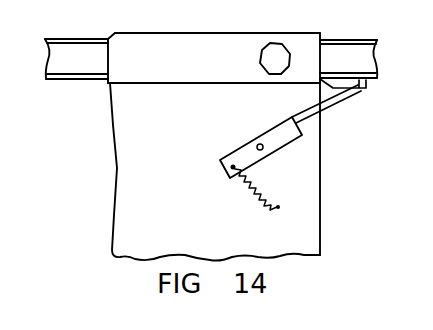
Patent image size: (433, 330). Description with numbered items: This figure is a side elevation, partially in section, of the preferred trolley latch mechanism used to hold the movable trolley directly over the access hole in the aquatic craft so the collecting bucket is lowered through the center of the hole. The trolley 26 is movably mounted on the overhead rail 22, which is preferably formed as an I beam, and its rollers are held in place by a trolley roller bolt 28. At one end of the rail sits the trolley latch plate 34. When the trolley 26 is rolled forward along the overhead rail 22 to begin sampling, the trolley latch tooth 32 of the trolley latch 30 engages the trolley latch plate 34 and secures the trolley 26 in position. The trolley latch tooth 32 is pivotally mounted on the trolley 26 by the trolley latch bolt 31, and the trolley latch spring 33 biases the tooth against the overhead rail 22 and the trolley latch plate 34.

The overhead rail 22 is at (88, 67).
The trolley 26 is at (167, 67).
The trolley roller bolt 28 is at (275, 58).
The trolley latch 30 is at (286, 134).
The trolley latch bolt 31 is at (259, 142).
The trolley latch tooth 32 is at (366, 92).
The trolley latch spring 33 is at (243, 188).
The trolley latch plate 34 is at (345, 84).